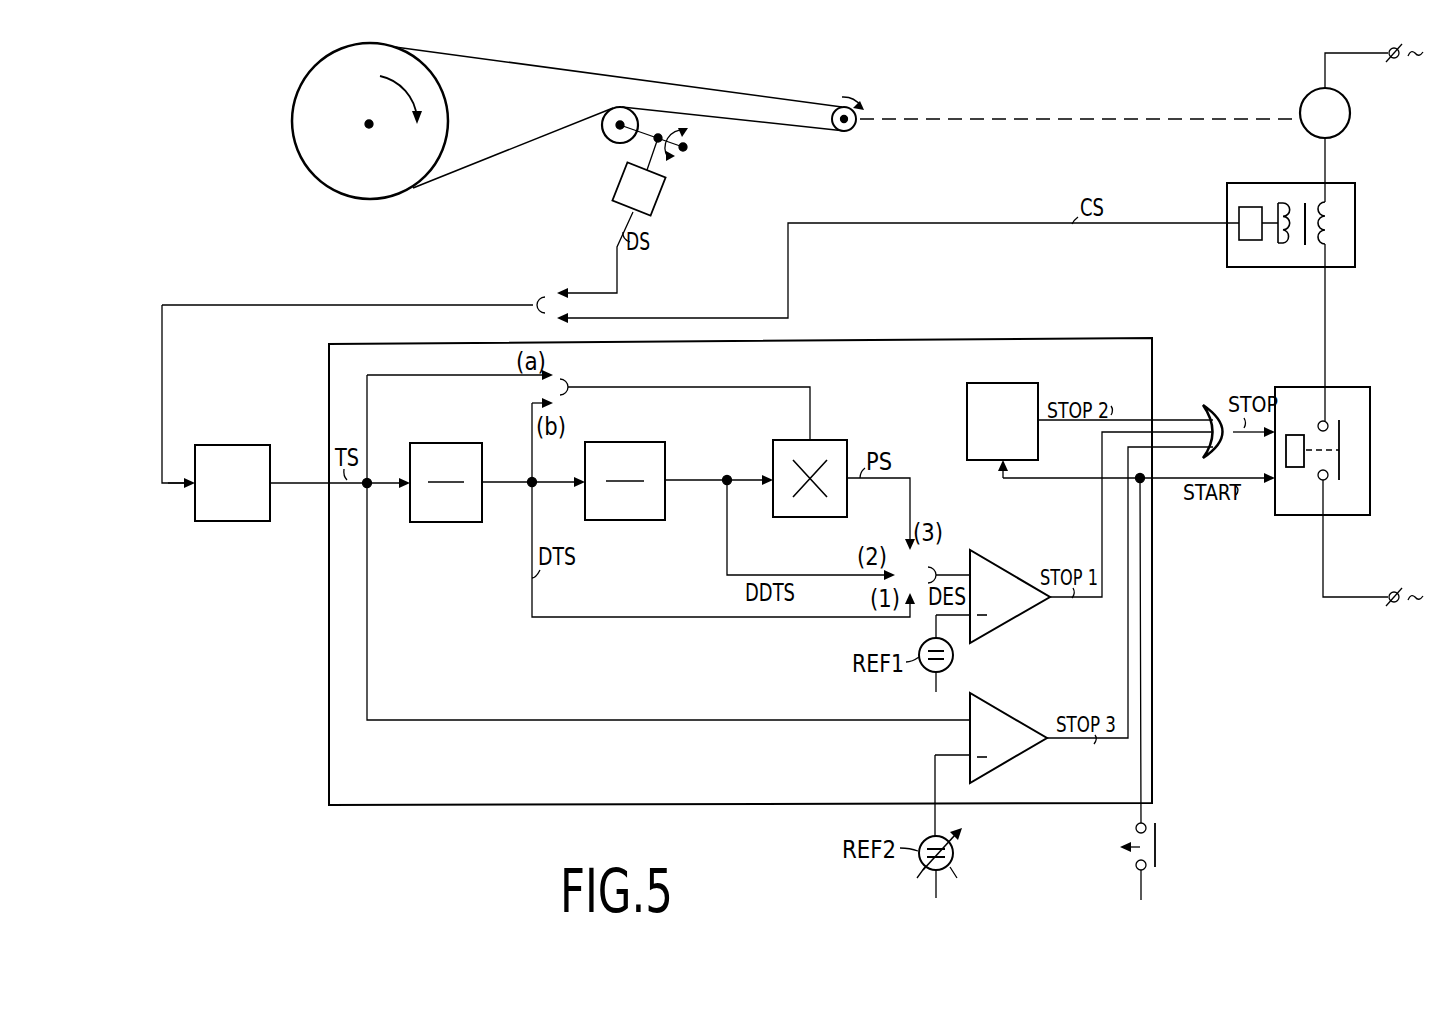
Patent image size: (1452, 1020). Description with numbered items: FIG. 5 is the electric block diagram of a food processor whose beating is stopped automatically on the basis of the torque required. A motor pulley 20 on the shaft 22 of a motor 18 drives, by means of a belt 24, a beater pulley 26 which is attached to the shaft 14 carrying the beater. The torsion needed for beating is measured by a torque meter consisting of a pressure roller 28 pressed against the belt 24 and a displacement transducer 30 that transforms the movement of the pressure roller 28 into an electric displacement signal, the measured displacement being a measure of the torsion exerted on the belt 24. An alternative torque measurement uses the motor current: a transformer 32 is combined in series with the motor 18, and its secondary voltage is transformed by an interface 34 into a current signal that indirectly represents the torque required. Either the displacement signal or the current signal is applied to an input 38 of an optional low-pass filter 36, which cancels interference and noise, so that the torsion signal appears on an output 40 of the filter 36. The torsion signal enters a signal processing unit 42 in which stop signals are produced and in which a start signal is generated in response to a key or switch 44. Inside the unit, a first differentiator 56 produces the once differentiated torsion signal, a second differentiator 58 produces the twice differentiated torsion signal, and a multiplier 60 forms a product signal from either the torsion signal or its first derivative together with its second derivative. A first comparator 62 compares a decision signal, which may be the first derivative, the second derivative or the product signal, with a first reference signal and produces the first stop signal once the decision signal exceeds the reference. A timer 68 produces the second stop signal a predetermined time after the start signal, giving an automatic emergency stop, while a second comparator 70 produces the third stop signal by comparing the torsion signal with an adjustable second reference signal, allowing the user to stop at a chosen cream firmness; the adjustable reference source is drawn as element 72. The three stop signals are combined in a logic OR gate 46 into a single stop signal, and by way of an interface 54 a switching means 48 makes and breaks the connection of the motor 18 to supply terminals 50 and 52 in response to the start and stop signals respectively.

The shaft 14 is at (365, 125).
The motor 18 is at (1351, 121).
The motor pulley 20 is at (854, 131).
The shaft of the motor 22 is at (993, 117).
The belt 24 is at (698, 84).
The beater pulley 26 is at (294, 162).
The pressure roller 28 is at (604, 138).
The displacement transducer 30 is at (664, 196).
The transformer 32 is at (1355, 225).
The interface 34 is at (1250, 240).
The low-pass filter 36 is at (229, 445).
The input of the low-pass filter 38 is at (192, 488).
The output of the low-pass filter 40 is at (272, 487).
The signal processing unit 42 is at (329, 660).
The switch 44 is at (1160, 852).
The logic OR gate 46 is at (1216, 406).
The switching means 48 is at (1371, 446).
The supply terminal 50 is at (1395, 62).
The supply terminal 52 is at (1395, 606).
The interface 54 is at (1295, 467).
The first differentiator 56 is at (443, 443).
The second differentiator 58 is at (618, 442).
The multiplier 60 is at (826, 440).
The first comparator 62 is at (1012, 610).
The timer 68 is at (998, 383).
The second comparator 70 is at (1013, 745).
The adjustable reference source 72 is at (946, 878).